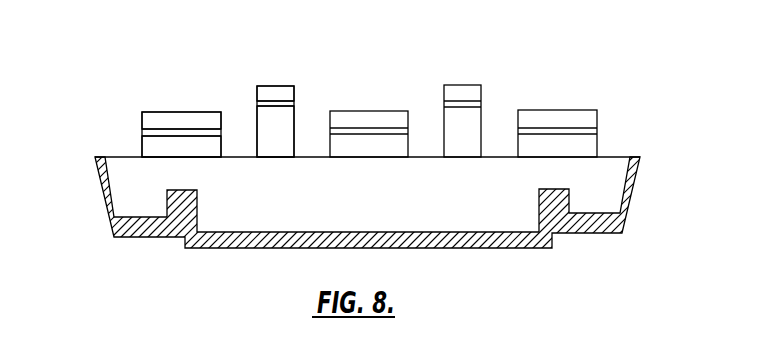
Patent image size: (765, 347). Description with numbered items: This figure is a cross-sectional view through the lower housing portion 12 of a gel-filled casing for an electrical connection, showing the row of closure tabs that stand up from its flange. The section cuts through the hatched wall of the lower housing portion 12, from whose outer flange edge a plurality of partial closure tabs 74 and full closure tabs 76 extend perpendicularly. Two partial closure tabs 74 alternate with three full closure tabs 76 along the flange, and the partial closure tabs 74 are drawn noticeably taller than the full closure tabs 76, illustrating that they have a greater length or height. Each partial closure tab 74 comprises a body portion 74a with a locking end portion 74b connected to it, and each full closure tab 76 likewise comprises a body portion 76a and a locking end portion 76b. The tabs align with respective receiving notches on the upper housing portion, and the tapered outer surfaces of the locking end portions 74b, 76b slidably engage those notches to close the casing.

The first housing portion 12 is at (640, 82).
The partial closure tab 74 is at (270, 84).
The body portion 74a is at (295, 128).
The locking end portion 74b is at (294, 89).
The full closure tab 76 is at (165, 111).
The body portion 76a is at (142, 148).
The locking end portion 76b is at (142, 122).